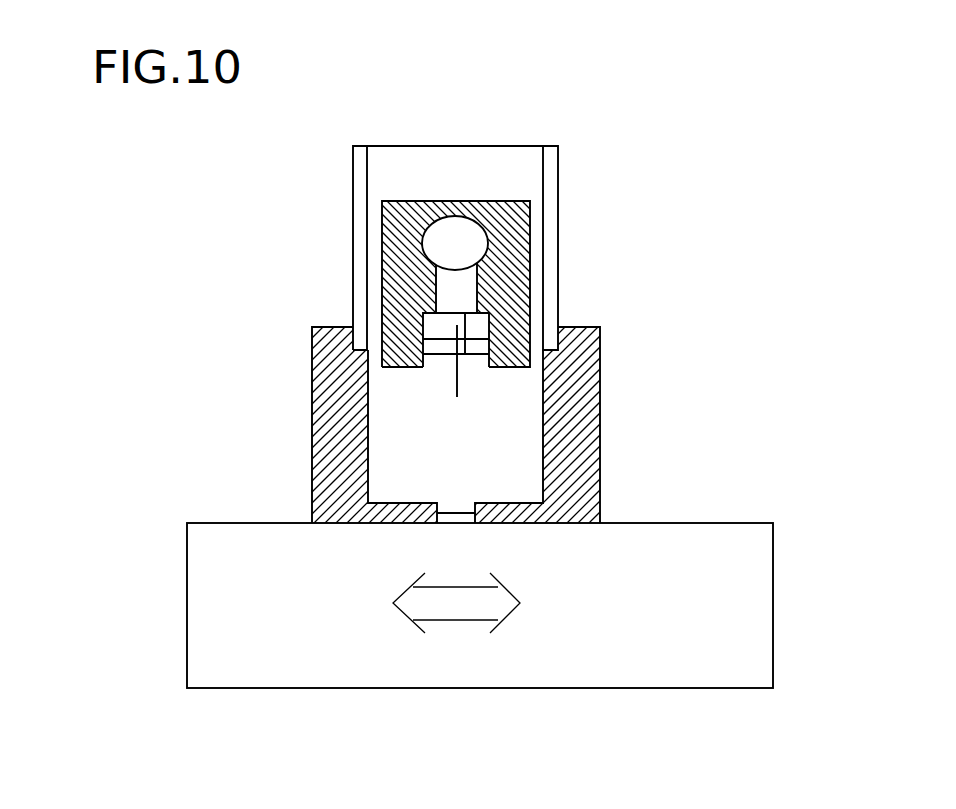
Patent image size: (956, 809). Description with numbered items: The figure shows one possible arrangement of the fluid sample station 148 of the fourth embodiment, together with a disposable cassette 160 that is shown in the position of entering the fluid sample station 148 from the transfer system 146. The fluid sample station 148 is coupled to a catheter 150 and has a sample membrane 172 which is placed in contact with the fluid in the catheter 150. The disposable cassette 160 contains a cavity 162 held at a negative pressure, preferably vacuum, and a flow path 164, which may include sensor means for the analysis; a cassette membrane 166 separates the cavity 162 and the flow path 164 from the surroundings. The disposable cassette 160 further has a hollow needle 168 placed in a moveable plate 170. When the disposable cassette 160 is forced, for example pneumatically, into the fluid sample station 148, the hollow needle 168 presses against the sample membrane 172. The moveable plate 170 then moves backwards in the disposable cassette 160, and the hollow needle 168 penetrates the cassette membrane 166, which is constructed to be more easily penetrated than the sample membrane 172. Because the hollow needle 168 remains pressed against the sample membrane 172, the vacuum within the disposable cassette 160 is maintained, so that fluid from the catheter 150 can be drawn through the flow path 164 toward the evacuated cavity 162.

The transfer system 146 is at (353, 165).
The fluid sample station 148 is at (312, 358).
The catheter 150 is at (212, 523).
The disposable cassette 160 is at (530, 200).
The cavity 162 is at (490, 238).
The flow path 164 is at (472, 299).
The cassette membrane 166 is at (472, 345).
The hollow needle 168 is at (455, 397).
The moveable plate 170 is at (438, 355).
The sample membrane 172 is at (445, 523).